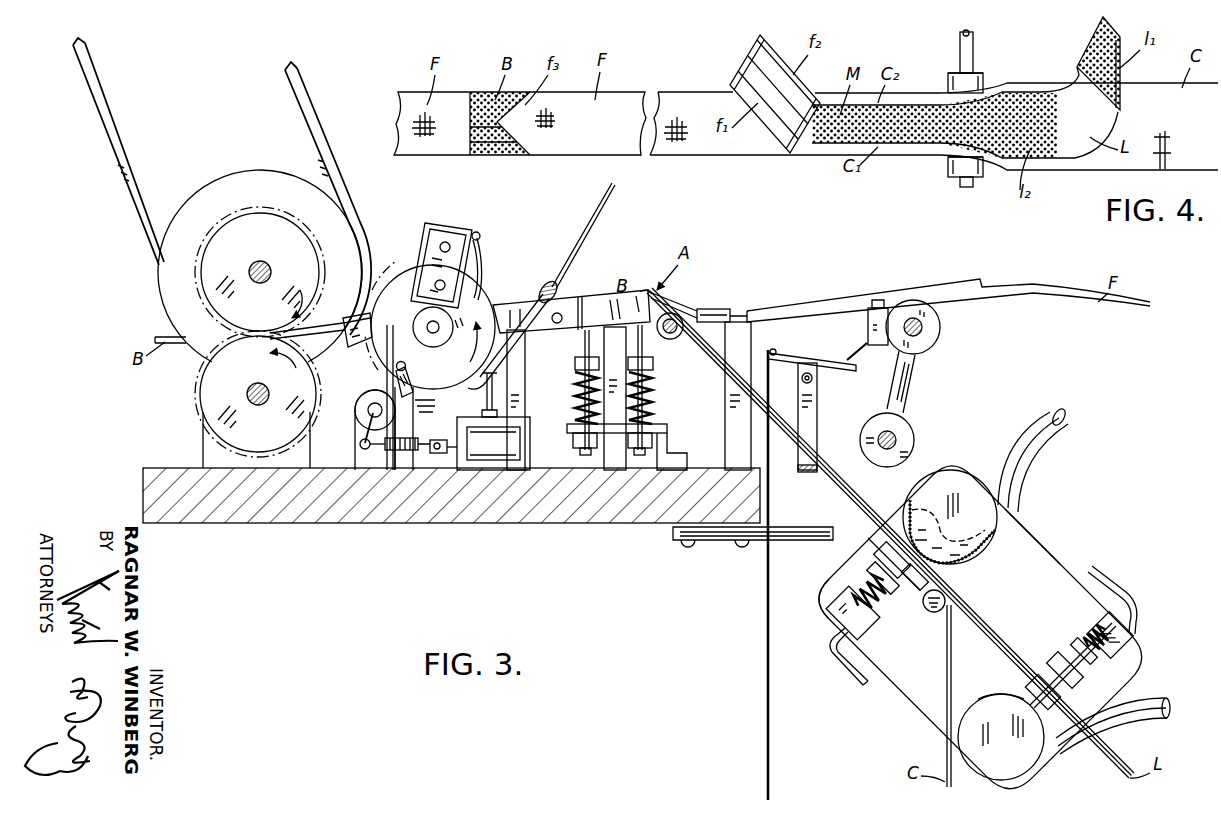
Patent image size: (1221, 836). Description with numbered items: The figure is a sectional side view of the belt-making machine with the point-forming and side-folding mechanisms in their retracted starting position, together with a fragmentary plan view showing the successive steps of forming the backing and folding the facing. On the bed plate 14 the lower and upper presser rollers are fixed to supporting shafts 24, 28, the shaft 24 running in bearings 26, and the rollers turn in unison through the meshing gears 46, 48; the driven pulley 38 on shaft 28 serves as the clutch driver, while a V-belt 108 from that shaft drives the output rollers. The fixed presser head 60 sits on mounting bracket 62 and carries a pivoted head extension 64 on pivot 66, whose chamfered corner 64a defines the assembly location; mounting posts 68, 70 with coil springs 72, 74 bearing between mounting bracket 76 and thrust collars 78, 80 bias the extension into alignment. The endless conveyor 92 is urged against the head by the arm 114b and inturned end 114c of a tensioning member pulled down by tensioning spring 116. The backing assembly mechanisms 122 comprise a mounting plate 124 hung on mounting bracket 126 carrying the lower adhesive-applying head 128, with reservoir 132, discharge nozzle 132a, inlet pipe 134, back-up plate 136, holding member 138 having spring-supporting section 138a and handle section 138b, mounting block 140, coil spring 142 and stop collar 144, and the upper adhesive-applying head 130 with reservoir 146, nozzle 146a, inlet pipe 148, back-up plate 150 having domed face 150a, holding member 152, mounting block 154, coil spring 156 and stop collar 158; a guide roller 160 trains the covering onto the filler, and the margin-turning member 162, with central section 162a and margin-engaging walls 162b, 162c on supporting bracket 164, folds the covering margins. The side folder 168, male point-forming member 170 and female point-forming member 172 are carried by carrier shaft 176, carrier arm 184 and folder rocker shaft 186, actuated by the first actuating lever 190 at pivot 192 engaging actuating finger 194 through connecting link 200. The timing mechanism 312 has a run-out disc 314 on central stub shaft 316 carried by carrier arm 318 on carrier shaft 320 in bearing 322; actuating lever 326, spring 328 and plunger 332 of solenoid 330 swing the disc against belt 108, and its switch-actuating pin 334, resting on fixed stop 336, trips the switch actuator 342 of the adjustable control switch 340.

In FIG. 3, the bed plate 14 is at (264, 510).
In FIG. 3, the supporting shaft 24 is at (255, 388).
In FIG. 3, the bearings 26 is at (205, 460).
In FIG. 3, the supporting shaft 28 is at (266, 266).
In FIG. 3, the driven pulley 38 is at (260, 182).
In FIG. 3, the gear 46 is at (207, 398).
In FIG. 3, the gear 48 is at (225, 243).
In FIG. 3, the fixed presser head 60 is at (511, 305).
In FIG. 3, the mounting bracket 62 is at (526, 407).
In FIG. 3, the head extension 64 is at (597, 305).
In FIG. 3, the chamfered corner 64a is at (648, 290).
In FIG. 3, the pivot 66 is at (557, 325).
In FIG. 3, the mounting post 68 is at (574, 360).
In FIG. 3, the mounting post 70 is at (652, 400).
In FIG. 3, the coil spring 72 is at (578, 410).
In FIG. 3, the coil spring 74 is at (667, 428).
In FIG. 3, the mounting bracket 76 is at (668, 451).
In FIG. 3, the thrust collar 78 is at (575, 386).
In FIG. 3, the thrust collar 80 is at (653, 384).
In FIG. 3, the endless conveyor 92 is at (162, 337).
In FIG. 3, the V-belt 108 is at (110, 118).
In FIG. 3, the arm 114b is at (540, 297).
In FIG. 3, the inturned end 114c is at (553, 284).
In FIG. 3, the tensioning spring 116 is at (482, 408).
In FIG. 3, the backing assembly mechanisms 122 is at (1094, 516).
In FIG. 3, the mounting plate 124 is at (1042, 548).
In FIG. 3, the mounting bracket 126 is at (805, 570).
In FIG. 3, the lower adhesive-applying head 128 is at (1027, 759).
In FIG. 3, the upper adhesive-applying head 130 is at (960, 488).
In FIG. 3, the reservoir 132 is at (1000, 764).
In FIG. 3, the discharge nozzle 132a is at (1019, 695).
In FIG. 3, the adhesive inlet pipe 134 is at (1164, 718).
In FIG. 3, the back-up plate 136 is at (1038, 672).
In FIG. 3, the holding member 138 is at (1132, 594).
In FIG. 3, the spring-supporting section 138a is at (1081, 637).
In FIG. 3, the handle section 138b is at (1106, 575).
In FIG. 3, the mounting block 140 is at (1130, 630).
In FIG. 3, the coil spring 142 is at (1092, 666).
In FIG. 3, the stop collar 144 is at (1058, 652).
In FIG. 3, the reservoir 146 is at (980, 557).
In FIG. 3, the nozzle 146a is at (950, 568).
In FIG. 3, the inlet pipe 148 is at (1071, 426).
In FIG. 3, the back-up plate 150 is at (880, 550).
In FIG. 3, the domed face 150a is at (876, 541).
In FIG. 3, the holding member 152 is at (840, 661).
In FIG. 3, the mounting block 154 is at (834, 614).
In FIG. 3, the coil spring 156 is at (878, 602).
In FIG. 3, the stop collar 158 is at (875, 577).
In FIG. 3, the guide roller 160 is at (934, 612).
In FIG. 3, the margin-turning member 162 is at (670, 340).
In FIG. 4, the margin-turning member 162 is at (954, 193).
In FIG. 4, the central section 162a is at (960, 50).
In FIG. 4, the margin-engaging wall 162b is at (950, 174).
In FIG. 4, the margin-engaging wall 162c is at (984, 83).
In FIG. 3, the supporting bracket 164 is at (613, 470).
In FIG. 3, the side folder 168 is at (955, 290).
In FIG. 3, the male point-forming member 170 is at (750, 314).
In FIG. 3, the female point-forming member 172 is at (692, 306).
In FIG. 3, the carrier shaft 176 is at (746, 448).
In FIG. 3, the carrier arm 184 is at (915, 377).
In FIG. 3, the folder rocker shaft 186 is at (920, 328).
In FIG. 3, the first actuating lever 190 is at (808, 368).
In FIG. 3, the pivot 192 is at (815, 381).
In FIG. 3, the actuating finger 194 is at (860, 359).
In FIG. 3, the connecting link 200 is at (766, 706).
In FIG. 3, the electromechanical timing mechanism 312 is at (470, 222).
In FIG. 3, the run-out disc 314 is at (400, 276).
In FIG. 3, the central stub shaft 316 is at (434, 334).
In FIG. 3, the carrier arm 318 is at (372, 390).
In FIG. 3, the carrier shaft 320 is at (368, 413).
In FIG. 3, the bearing 322 is at (361, 466).
In FIG. 3, the actuating lever 326 is at (360, 444).
In FIG. 3, the spring 328 is at (404, 452).
In FIG. 3, the solenoid 330 is at (493, 443).
In FIG. 3, the plunger 332 is at (446, 455).
In FIG. 3, the switch-actuating pin 334 is at (397, 368).
In FIG. 3, the fixed stop 336 is at (388, 326).
In FIG. 3, the control switch 340 is at (434, 222).
In FIG. 3, the switch actuator 342 is at (485, 262).